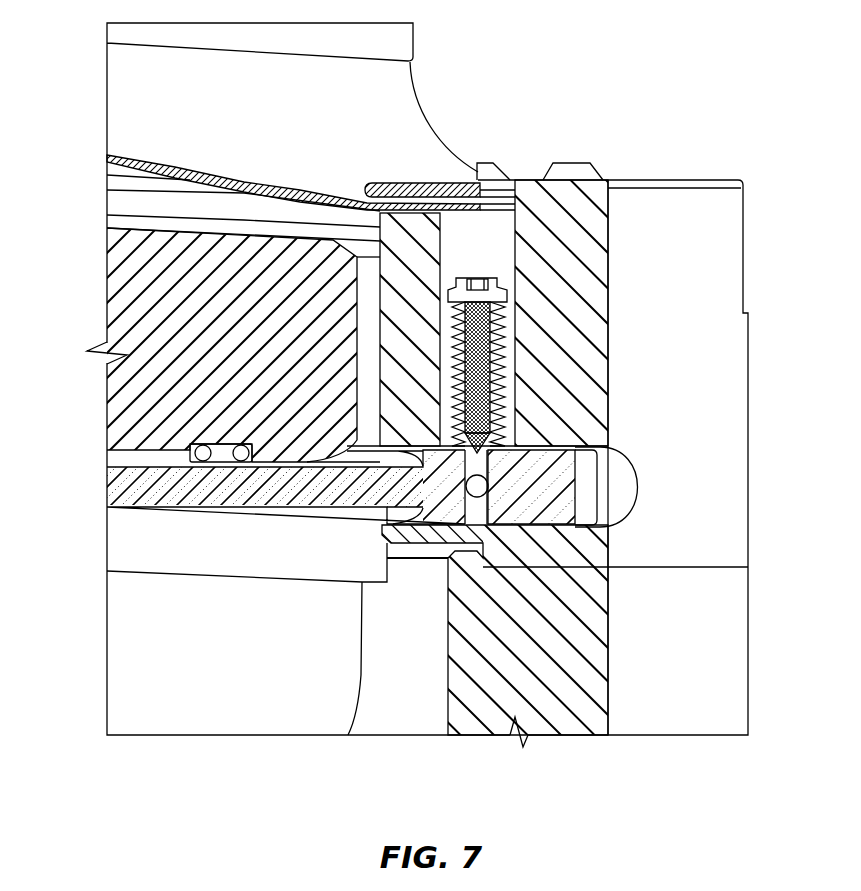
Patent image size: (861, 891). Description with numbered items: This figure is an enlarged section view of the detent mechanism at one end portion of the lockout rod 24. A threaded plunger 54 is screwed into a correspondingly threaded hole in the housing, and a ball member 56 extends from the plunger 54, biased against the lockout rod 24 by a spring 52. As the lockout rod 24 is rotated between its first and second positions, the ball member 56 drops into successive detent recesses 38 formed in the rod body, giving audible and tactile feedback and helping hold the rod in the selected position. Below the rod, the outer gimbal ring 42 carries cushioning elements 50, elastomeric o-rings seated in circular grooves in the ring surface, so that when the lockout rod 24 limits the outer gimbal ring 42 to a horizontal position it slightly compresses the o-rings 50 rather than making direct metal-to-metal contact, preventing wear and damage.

The lockout rod 24 is at (660, 467).
The detent recesses 38 is at (452, 525).
The outer gimbal ring 42 is at (190, 302).
The cushioning elements 50 is at (205, 457).
The spring 52 is at (634, 292).
The threaded plunger 54 is at (505, 303).
The ball member 56 is at (503, 430).